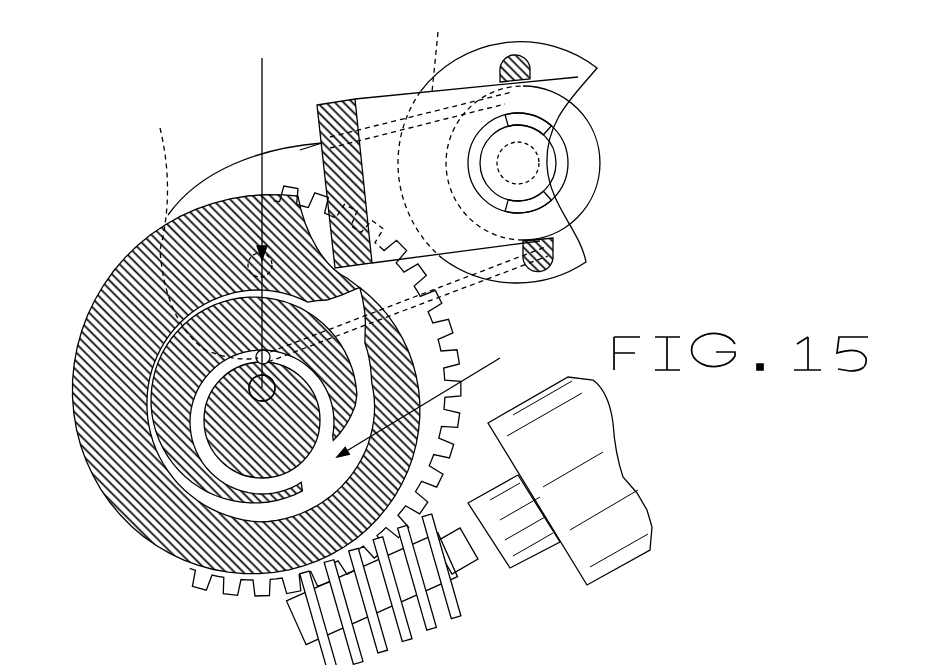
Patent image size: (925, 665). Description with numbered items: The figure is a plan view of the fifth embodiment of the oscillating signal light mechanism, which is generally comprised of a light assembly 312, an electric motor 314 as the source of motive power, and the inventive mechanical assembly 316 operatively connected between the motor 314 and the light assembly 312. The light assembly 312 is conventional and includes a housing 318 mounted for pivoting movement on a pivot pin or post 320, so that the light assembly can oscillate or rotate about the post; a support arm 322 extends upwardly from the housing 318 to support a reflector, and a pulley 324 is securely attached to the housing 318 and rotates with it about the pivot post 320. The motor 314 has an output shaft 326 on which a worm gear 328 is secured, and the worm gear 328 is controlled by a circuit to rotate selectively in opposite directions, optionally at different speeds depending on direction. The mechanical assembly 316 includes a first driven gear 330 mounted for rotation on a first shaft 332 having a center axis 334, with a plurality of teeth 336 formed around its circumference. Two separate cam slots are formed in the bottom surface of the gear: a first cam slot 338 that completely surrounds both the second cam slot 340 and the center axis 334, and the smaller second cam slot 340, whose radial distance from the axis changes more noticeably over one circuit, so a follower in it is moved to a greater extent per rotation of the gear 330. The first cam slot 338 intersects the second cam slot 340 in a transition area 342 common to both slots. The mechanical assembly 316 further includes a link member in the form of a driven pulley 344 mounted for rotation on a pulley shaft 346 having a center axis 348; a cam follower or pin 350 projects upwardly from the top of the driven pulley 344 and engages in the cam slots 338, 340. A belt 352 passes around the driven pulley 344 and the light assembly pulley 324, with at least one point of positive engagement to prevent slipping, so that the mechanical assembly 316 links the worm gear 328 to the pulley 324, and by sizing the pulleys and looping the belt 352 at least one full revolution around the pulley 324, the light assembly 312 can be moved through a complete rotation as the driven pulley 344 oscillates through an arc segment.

The light assembly 312 is at (615, 75).
The electric motor 314 is at (622, 515).
The mechanical assembly 316 is at (120, 213).
The housing 318 is at (586, 262).
The pivot post 320 is at (560, 137).
The support arm 322 is at (335, 103).
The pulley 324 is at (440, 48).
The output shaft 326 is at (482, 542).
The worm gear 328 is at (403, 623).
The first driven gear 330 is at (92, 295).
The first shaft 332 is at (258, 400).
The center axis 334 is at (260, 395).
The teeth 336 is at (462, 340).
The first cam slot 338 is at (150, 438).
The second cam slot 340 is at (203, 388).
The transition area 342 is at (442, 399).
The driven pulley 344 is at (228, 182).
The pulley shaft 346 is at (197, 229).
The center axis 348 is at (255, 209).
The cam follower pin 350 is at (130, 262).
The belt 352 is at (320, 142).